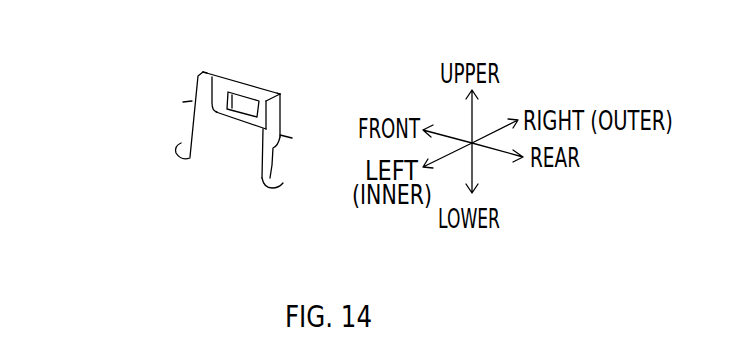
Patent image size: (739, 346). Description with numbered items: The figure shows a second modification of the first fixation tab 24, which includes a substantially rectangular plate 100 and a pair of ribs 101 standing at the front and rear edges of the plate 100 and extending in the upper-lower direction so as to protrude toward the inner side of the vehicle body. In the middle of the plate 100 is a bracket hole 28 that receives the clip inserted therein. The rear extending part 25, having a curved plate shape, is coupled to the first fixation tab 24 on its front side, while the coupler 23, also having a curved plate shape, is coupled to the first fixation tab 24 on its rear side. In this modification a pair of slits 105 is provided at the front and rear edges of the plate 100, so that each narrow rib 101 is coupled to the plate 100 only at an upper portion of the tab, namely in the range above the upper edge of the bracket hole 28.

The first fixation tab 24 is at (160, 91).
The plate 100 is at (240, 83).
The ribs 101 is at (203, 71).
The slits 105 is at (287, 122).
The bracket hole 28 is at (229, 107).
The rear extending part 25 is at (186, 145).
The coupler 23 is at (283, 163).